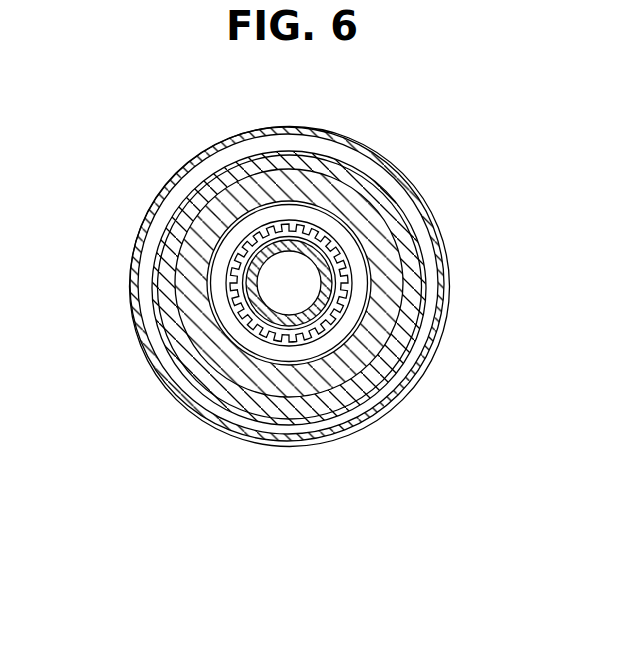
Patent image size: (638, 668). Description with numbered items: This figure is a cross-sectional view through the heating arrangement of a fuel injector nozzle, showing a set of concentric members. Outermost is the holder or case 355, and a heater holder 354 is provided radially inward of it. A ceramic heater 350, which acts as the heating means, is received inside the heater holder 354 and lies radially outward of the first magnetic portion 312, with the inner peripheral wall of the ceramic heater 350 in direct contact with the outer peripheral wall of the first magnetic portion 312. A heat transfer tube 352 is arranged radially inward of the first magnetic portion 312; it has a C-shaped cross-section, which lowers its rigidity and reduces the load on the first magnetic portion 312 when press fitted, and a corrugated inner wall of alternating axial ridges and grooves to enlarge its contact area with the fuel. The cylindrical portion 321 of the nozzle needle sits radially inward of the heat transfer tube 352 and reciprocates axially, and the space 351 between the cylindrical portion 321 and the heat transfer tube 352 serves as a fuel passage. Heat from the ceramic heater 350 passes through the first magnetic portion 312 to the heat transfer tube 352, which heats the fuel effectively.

The first magnetic portion 312 is at (303, 217).
The cylindrical portion 321 is at (268, 330).
The ceramic heater 350 is at (355, 210).
The space 351 is at (210, 247).
The heat transfer tube 352 is at (258, 225).
The heater holder 354 is at (401, 336).
The holder 355 is at (385, 406).